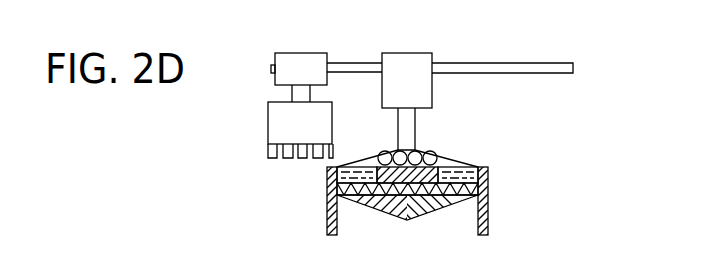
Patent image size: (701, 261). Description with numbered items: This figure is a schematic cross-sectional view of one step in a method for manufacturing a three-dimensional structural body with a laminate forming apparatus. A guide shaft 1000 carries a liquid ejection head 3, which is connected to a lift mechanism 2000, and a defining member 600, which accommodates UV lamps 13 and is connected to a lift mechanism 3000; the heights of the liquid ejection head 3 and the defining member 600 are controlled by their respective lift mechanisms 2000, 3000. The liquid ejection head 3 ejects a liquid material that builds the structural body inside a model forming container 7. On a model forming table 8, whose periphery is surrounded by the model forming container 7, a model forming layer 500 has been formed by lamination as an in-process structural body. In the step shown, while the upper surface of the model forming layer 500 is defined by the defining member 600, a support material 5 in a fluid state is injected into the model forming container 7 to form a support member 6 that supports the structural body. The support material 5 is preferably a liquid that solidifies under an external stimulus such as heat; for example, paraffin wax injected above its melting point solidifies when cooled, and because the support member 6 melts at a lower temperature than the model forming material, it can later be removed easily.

The guide shaft 1000 is at (537, 67).
The lift mechanism 2000 is at (298, 62).
The lift mechanism 3000 is at (407, 60).
The liquid ejection head 3 is at (275, 124).
The UV lamps 13 is at (428, 156).
The defining member 600 is at (443, 162).
The model forming layer 500 is at (362, 174).
The support material 5 is at (476, 175).
The support member 6 is at (470, 188).
The model forming container 7 is at (328, 212).
The model forming table 8 is at (422, 207).